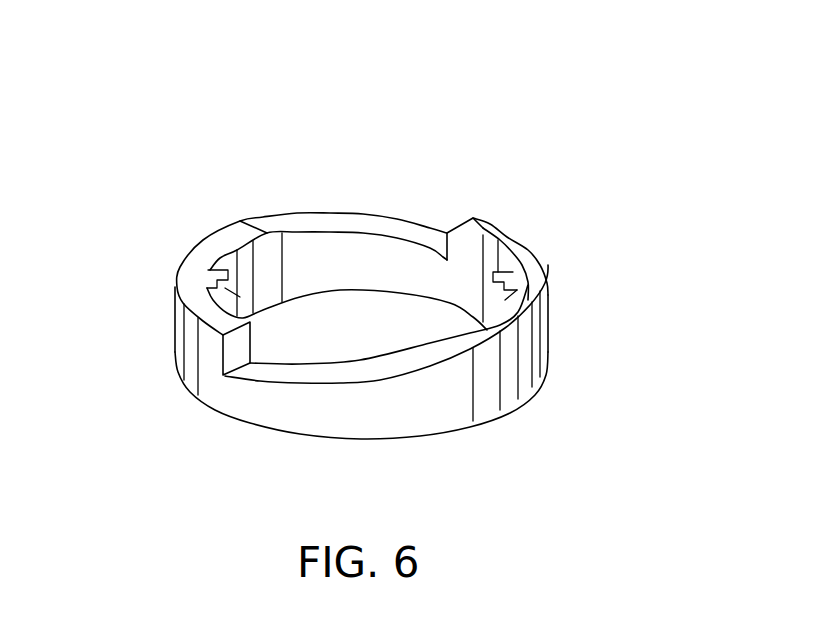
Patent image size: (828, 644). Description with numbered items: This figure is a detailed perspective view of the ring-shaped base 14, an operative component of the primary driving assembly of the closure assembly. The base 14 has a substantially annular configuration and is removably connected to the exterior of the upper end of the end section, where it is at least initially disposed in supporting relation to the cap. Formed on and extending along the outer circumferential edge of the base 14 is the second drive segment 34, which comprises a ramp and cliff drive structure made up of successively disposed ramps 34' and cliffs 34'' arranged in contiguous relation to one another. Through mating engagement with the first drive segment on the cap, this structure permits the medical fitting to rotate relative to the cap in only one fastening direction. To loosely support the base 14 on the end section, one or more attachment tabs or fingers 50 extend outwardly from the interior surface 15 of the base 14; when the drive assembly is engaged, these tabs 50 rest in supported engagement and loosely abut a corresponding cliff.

The base 14 is at (547, 343).
The interior surface 15 is at (308, 290).
The second drive segment 34 is at (316, 126).
The ramps 34' is at (478, 283).
The cliffs 34'' is at (301, 234).
The attachment tabs 50 is at (212, 272).